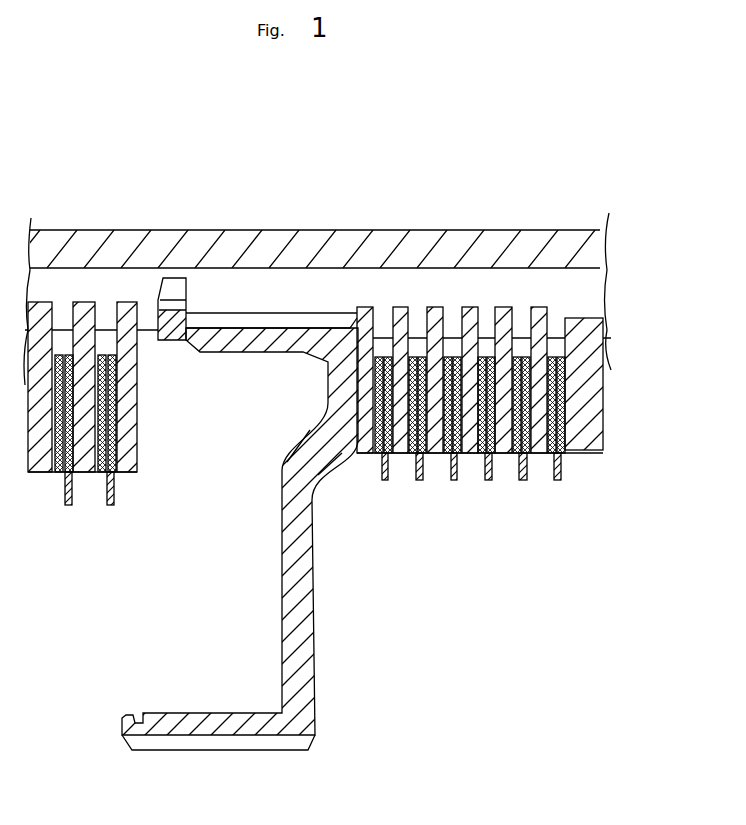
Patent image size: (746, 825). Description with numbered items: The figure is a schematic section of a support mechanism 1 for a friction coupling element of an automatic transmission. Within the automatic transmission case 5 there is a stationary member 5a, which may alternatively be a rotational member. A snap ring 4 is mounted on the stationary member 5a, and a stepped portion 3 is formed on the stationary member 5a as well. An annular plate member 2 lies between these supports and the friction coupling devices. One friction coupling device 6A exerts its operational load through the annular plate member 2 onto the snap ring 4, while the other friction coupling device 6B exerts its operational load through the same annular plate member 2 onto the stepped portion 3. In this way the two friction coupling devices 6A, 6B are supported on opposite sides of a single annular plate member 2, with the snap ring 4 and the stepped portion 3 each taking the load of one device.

The support mechanism 1 is at (398, 210).
The annular plate member 2 is at (303, 557).
The stepped portion 3 is at (313, 313).
The snap ring 4 is at (172, 305).
The automatic transmission case 5 is at (490, 230).
The stationary member 5a is at (573, 285).
The friction coupling device 6A is at (531, 290).
The friction coupling device 6B is at (83, 283).